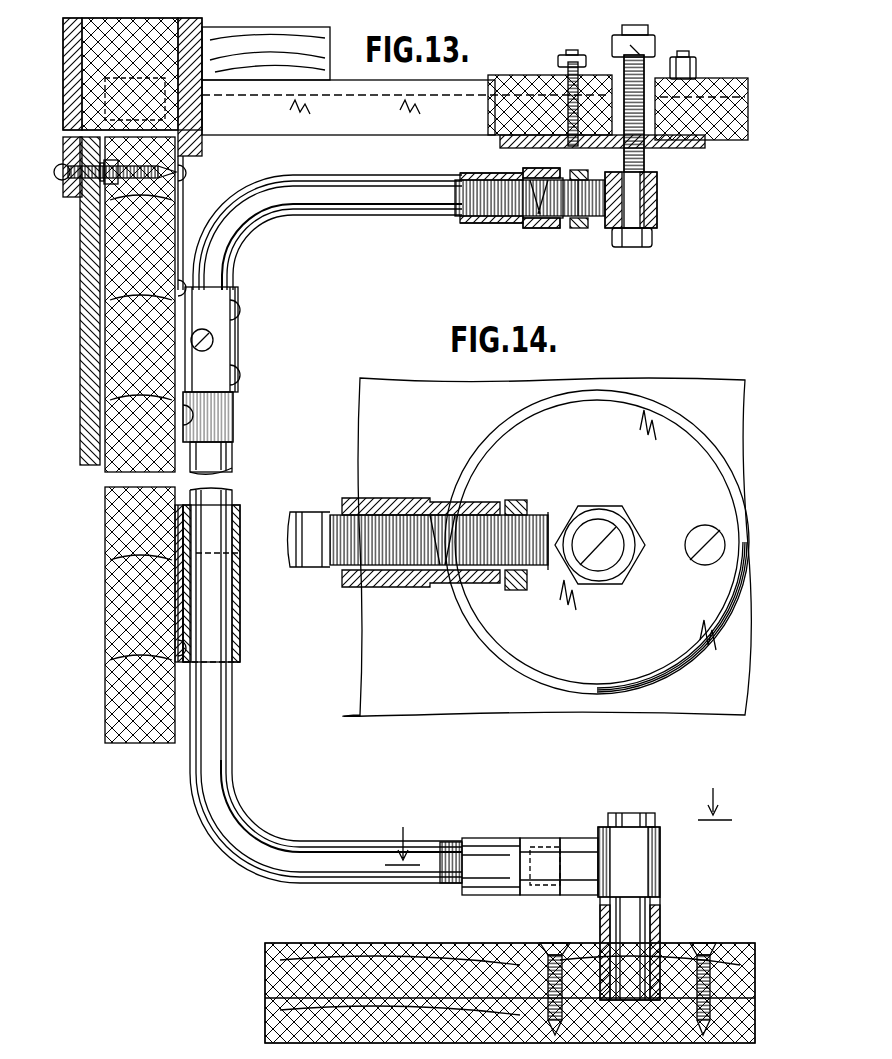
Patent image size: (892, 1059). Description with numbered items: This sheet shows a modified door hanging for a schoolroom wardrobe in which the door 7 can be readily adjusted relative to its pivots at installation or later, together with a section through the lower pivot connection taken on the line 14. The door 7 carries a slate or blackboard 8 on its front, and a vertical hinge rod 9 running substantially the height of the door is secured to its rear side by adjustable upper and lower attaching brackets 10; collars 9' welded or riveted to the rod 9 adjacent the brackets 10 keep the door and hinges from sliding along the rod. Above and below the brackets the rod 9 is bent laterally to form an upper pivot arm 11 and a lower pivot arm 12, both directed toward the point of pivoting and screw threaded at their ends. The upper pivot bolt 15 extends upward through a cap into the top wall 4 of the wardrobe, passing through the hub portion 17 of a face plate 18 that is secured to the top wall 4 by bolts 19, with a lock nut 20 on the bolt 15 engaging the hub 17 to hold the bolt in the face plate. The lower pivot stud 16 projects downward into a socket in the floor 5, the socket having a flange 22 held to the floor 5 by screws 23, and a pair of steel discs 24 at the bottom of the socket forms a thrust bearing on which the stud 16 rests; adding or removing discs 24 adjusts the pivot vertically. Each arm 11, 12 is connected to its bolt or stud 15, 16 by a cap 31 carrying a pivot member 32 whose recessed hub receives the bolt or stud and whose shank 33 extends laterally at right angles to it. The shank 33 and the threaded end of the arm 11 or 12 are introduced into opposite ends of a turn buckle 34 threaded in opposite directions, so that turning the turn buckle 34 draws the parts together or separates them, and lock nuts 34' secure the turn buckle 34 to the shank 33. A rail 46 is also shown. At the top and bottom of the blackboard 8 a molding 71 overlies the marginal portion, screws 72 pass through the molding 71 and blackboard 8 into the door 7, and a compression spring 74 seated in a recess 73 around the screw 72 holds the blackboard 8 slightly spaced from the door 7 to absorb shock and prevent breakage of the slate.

In FIG. 13, the top wall 4 is at (522, 90).
In FIG. 13, the floor 5 is at (386, 960).
In FIG. 14, the floor 5 is at (396, 392).
In FIG. 13, the door 7 is at (135, 300).
In FIG. 13, the slate 8 is at (92, 412).
In FIG. 13, the hinge rod 9 is at (228, 588).
In FIG. 13, the collar 9' is at (226, 478).
In FIG. 13, the attaching bracket 10 is at (238, 362).
In FIG. 13, the upper pivot arm 11 is at (376, 205).
In FIG. 14, the upper pivot arm 11 is at (310, 520).
In FIG. 13, the lower pivot arm 12 is at (318, 845).
In FIG. 13, the section line 14 is at (558, 826).
In FIG. 13, the pivot bolt 15 is at (636, 238).
In FIG. 13, the pivot stud 16 is at (626, 815).
In FIG. 14, the pivot stud 16 is at (604, 560).
In FIG. 13, the hub portion 17 is at (662, 62).
In FIG. 13, the face plate 18 is at (700, 148).
In FIG. 13, the bolt 19 is at (566, 58).
In FIG. 13, the lock nut 20 is at (614, 44).
In FIG. 13, the flange 22 is at (542, 948).
In FIG. 14, the flange 22 is at (522, 642).
In FIG. 13, the screw 23 is at (716, 945).
In FIG. 14, the screw 23 is at (702, 558).
In FIG. 13, the steel disc 24 is at (640, 960).
In FIG. 13, the cap 31 is at (657, 210).
In FIG. 14, the cap 31 is at (636, 522).
In FIG. 13, the pivot member 32 is at (594, 230).
In FIG. 14, the pivot member 32 is at (546, 510).
In FIG. 13, the shank 33 is at (552, 226).
In FIG. 14, the shank 33 is at (520, 585).
In FIG. 13, the turn buckle 34 is at (522, 531).
In FIG. 14, the turn buckle 34 is at (421, 522).
In FIG. 13, the lock nut 34' is at (583, 240).
In FIG. 14, the lock nut 34' is at (517, 523).
In FIG. 13, the rail 46 is at (330, 125).
In FIG. 13, the molding 71 is at (65, 150).
In FIG. 13, the screw 72 is at (60, 172).
In FIG. 13, the recess 73 is at (115, 200).
In FIG. 13, the compression spring 74 is at (110, 190).